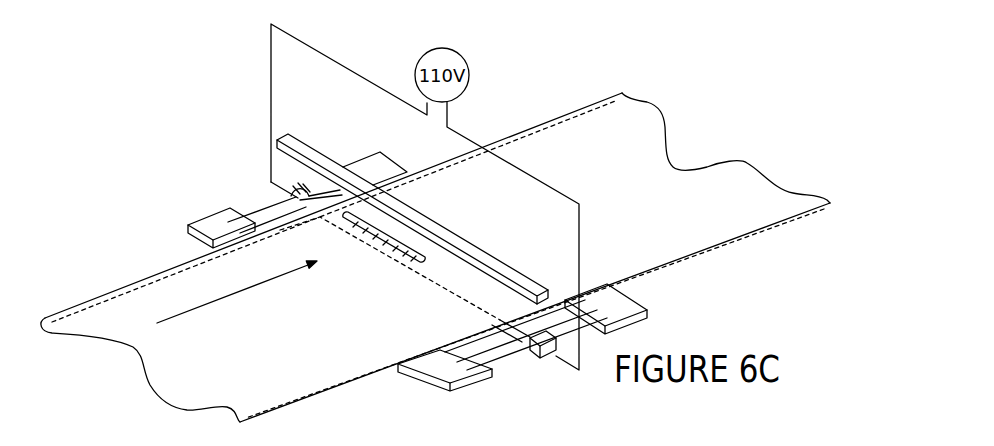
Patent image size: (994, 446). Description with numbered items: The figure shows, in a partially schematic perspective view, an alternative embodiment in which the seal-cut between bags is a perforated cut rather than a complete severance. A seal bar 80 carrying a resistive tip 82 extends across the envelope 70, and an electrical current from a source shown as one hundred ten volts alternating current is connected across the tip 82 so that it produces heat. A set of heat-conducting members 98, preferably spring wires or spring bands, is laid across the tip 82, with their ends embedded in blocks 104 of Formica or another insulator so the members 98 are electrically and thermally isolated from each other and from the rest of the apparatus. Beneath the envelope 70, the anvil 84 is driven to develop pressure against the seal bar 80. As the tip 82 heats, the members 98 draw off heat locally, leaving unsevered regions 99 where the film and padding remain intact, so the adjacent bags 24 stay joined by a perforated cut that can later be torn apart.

The bags 24 is at (640, 190).
The envelope 70 is at (322, 330).
The seal bar 80 is at (502, 262).
The resistive tip 82 is at (478, 296).
The anvil 84 is at (545, 358).
The heat-conducting members 98 is at (262, 222).
The unsevered regions 99 is at (445, 272).
The blocks 104 is at (640, 302).